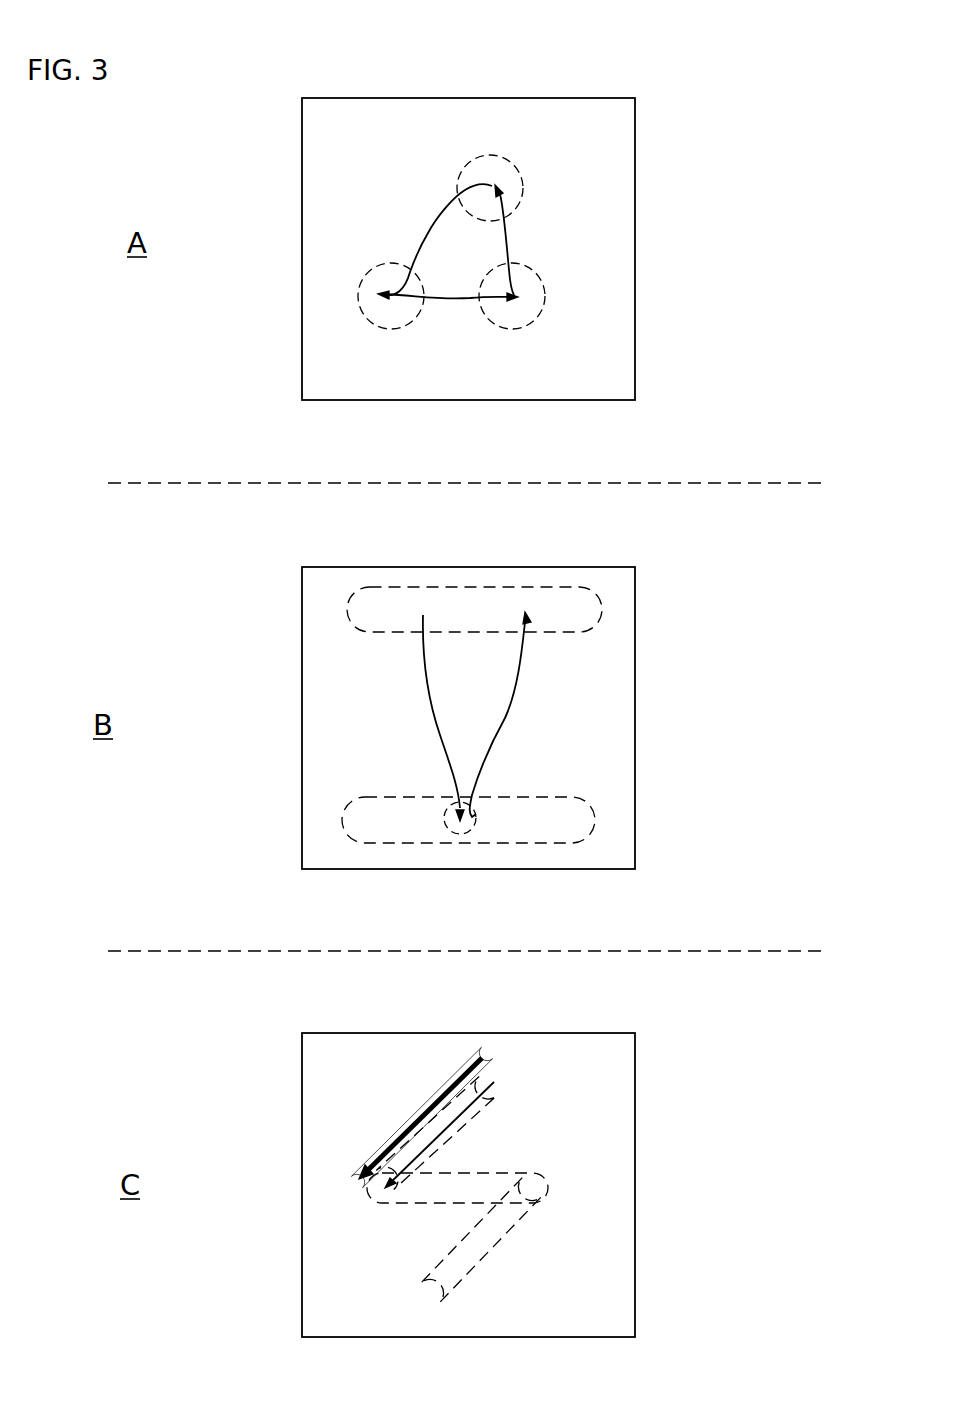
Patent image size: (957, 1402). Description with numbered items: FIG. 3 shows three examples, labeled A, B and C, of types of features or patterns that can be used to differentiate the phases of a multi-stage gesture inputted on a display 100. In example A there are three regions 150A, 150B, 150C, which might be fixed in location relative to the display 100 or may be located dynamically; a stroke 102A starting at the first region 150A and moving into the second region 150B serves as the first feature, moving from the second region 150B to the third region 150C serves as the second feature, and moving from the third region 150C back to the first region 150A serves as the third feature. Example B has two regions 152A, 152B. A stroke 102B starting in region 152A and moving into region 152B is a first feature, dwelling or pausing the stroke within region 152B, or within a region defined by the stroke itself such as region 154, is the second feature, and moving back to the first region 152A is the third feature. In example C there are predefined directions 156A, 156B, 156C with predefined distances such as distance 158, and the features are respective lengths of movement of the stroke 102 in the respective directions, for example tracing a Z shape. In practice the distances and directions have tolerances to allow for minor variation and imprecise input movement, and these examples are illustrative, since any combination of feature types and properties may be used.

The display 100 is at (628, 88).
The stroke 102A is at (428, 233).
The first region 150A is at (490, 153).
The second region 150B is at (358, 297).
The third region 150C is at (546, 297).
The first region 152A is at (349, 604).
The second region 152B is at (370, 797).
The region defined by the stroke 154 is at (443, 818).
The stroke 102B is at (427, 717).
The predefined direction 156A is at (503, 1075).
The predefined direction 156B is at (430, 1205).
The predefined direction 156C is at (410, 1293).
The distance 158 is at (421, 1111).
The stroke 102 is at (440, 1133).